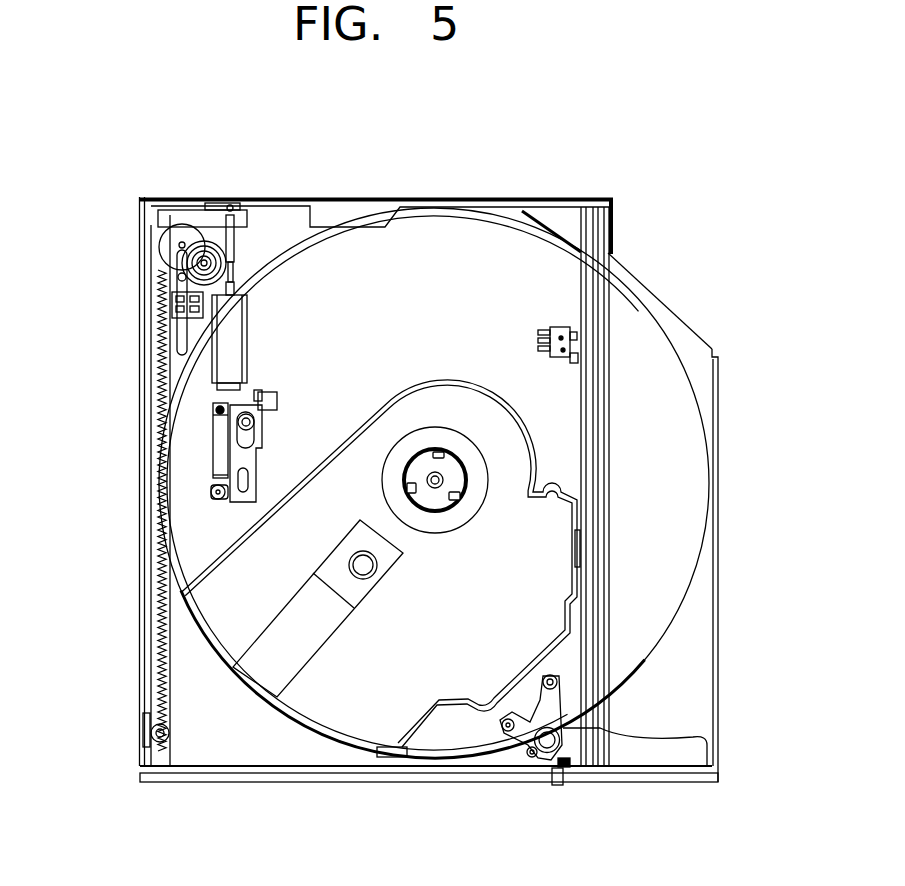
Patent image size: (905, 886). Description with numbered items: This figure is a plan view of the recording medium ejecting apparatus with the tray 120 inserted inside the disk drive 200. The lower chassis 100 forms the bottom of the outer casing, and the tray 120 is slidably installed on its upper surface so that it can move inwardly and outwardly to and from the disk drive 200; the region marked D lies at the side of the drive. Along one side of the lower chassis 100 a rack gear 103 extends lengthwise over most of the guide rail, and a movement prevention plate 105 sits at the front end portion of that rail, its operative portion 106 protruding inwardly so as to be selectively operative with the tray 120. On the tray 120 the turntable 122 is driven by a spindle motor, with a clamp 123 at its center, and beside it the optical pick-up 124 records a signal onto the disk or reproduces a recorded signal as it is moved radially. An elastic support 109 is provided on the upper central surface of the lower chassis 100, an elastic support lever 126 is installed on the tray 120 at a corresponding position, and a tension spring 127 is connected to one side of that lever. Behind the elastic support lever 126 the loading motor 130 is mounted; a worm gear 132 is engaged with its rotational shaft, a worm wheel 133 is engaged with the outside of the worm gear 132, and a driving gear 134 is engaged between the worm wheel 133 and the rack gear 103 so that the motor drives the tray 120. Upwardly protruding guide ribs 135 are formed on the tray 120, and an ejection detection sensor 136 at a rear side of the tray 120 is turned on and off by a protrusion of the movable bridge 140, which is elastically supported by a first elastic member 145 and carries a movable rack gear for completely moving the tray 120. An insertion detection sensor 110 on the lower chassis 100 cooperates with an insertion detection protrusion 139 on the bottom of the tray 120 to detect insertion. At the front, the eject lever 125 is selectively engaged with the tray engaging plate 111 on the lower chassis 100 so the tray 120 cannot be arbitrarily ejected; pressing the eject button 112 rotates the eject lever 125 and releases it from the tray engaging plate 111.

The lower chassis 100 is at (718, 684).
The rack gear 103 is at (167, 627).
The movement prevention plate 105 is at (148, 731).
The operative portion 106 is at (167, 738).
The elastic support 109 is at (272, 397).
The insertion detection sensor 110 is at (555, 328).
The tray engaging plate 111 is at (587, 707).
The eject button 112 is at (562, 787).
The tray 120 is at (242, 756).
The turntable 122 is at (435, 438).
The disc clamp 123 is at (462, 500).
The optical pick-up 124 is at (332, 562).
The eject lever 125 is at (508, 744).
The elastic support lever 126 is at (255, 462).
The tension spring 127 is at (222, 443).
The loading motor 130 is at (236, 337).
The worm gear 132 is at (243, 262).
The worm wheel 133 is at (193, 278).
The driving gear 134 is at (182, 227).
The guide ribs 135 is at (204, 263).
The ejection detection sensor 136 is at (175, 325).
The insertion detection protrusion 139 is at (578, 356).
The movable bridge 140 is at (187, 215).
The first elastic member 145 is at (240, 218).
The disk drive 200 is at (662, 245).
The tray edge D is at (678, 358).